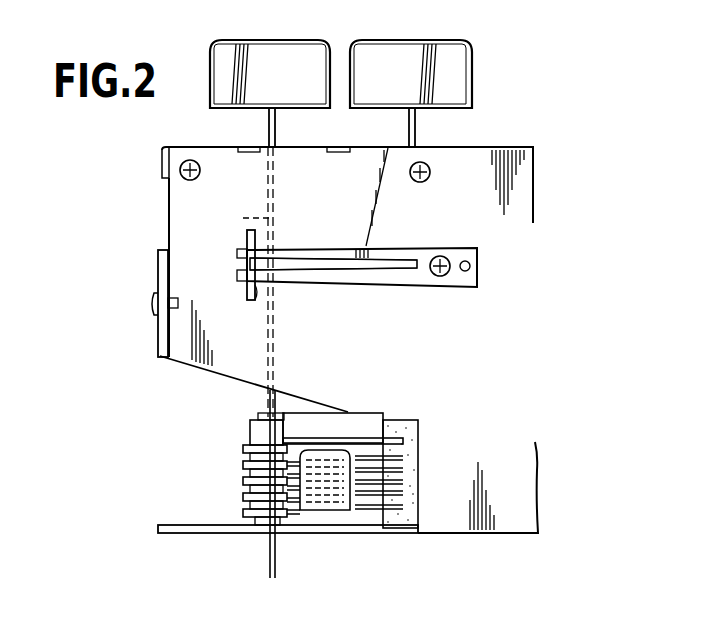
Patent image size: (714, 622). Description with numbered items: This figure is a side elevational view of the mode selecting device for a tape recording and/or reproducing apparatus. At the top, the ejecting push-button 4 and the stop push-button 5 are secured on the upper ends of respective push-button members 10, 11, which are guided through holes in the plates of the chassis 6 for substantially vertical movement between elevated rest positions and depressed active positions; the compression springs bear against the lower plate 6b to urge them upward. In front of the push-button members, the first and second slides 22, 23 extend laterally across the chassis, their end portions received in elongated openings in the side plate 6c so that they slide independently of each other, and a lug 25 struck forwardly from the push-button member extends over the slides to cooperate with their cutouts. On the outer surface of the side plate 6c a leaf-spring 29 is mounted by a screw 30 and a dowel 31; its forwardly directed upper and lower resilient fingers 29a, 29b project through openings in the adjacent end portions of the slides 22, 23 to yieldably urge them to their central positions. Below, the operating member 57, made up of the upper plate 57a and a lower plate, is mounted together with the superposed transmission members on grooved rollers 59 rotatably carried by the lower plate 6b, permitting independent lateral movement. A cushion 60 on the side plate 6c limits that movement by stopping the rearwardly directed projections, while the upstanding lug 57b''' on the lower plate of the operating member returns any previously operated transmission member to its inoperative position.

The push-button 4 is at (258, 50).
The stop push-button 5 is at (396, 50).
The chassis 6 is at (533, 172).
The lower plate 6b is at (222, 533).
The side plate 6c is at (170, 224).
The push-button member 10 is at (275, 124).
The push-button member 11 is at (415, 125).
The first slide 22 is at (247, 240).
The second slide 23 is at (256, 294).
The lug 25 is at (259, 214).
The leaf-spring 29 is at (412, 255).
The upper resilient finger 29a is at (320, 252).
The lower resilient finger 29b is at (358, 284).
The screw 30 is at (443, 277).
The dowel 31 is at (478, 266).
The operating member 57 is at (368, 436).
The upper plate 57a is at (328, 437).
The upstanding lug 57b''' is at (327, 514).
The grooved roller 59 is at (250, 459).
The cushion 60 is at (418, 458).